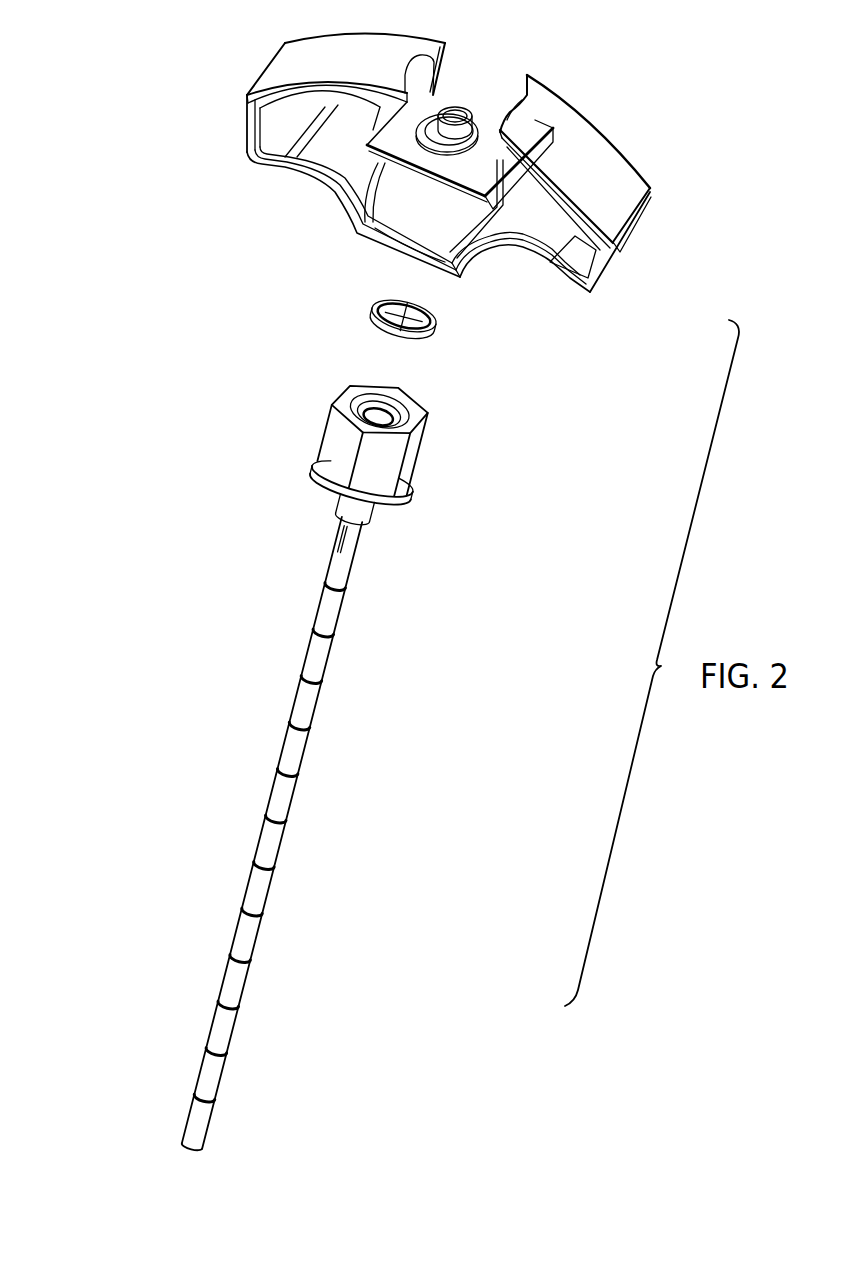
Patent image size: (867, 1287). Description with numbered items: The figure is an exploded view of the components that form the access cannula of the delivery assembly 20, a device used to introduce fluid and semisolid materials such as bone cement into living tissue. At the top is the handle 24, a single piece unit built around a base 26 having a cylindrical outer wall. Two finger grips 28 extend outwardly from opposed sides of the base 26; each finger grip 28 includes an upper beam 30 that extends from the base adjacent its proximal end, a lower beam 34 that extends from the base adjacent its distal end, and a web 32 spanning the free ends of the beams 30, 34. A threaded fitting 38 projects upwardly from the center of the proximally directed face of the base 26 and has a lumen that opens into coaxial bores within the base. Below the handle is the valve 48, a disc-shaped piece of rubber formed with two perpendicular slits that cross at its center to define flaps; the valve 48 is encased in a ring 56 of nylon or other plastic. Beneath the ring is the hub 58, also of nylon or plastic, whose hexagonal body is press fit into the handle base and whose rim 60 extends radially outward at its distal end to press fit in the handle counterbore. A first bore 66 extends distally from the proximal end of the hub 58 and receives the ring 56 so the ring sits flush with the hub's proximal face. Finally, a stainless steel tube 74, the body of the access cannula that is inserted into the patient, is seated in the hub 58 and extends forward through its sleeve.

The delivery assembly 20 is at (140, 189).
The handle 24 is at (430, 172).
The base 26 is at (434, 222).
The finger grip 28 is at (287, 43).
The beam 30 is at (352, 67).
The web 32 is at (243, 128).
The beam 34 is at (286, 168).
The fitting 38 is at (462, 101).
The valve 48 is at (423, 335).
The ring 56 is at (368, 318).
The hub 58 is at (414, 445).
The rim 60 is at (390, 507).
The bore 66 is at (372, 400).
The tube 74 is at (257, 849).